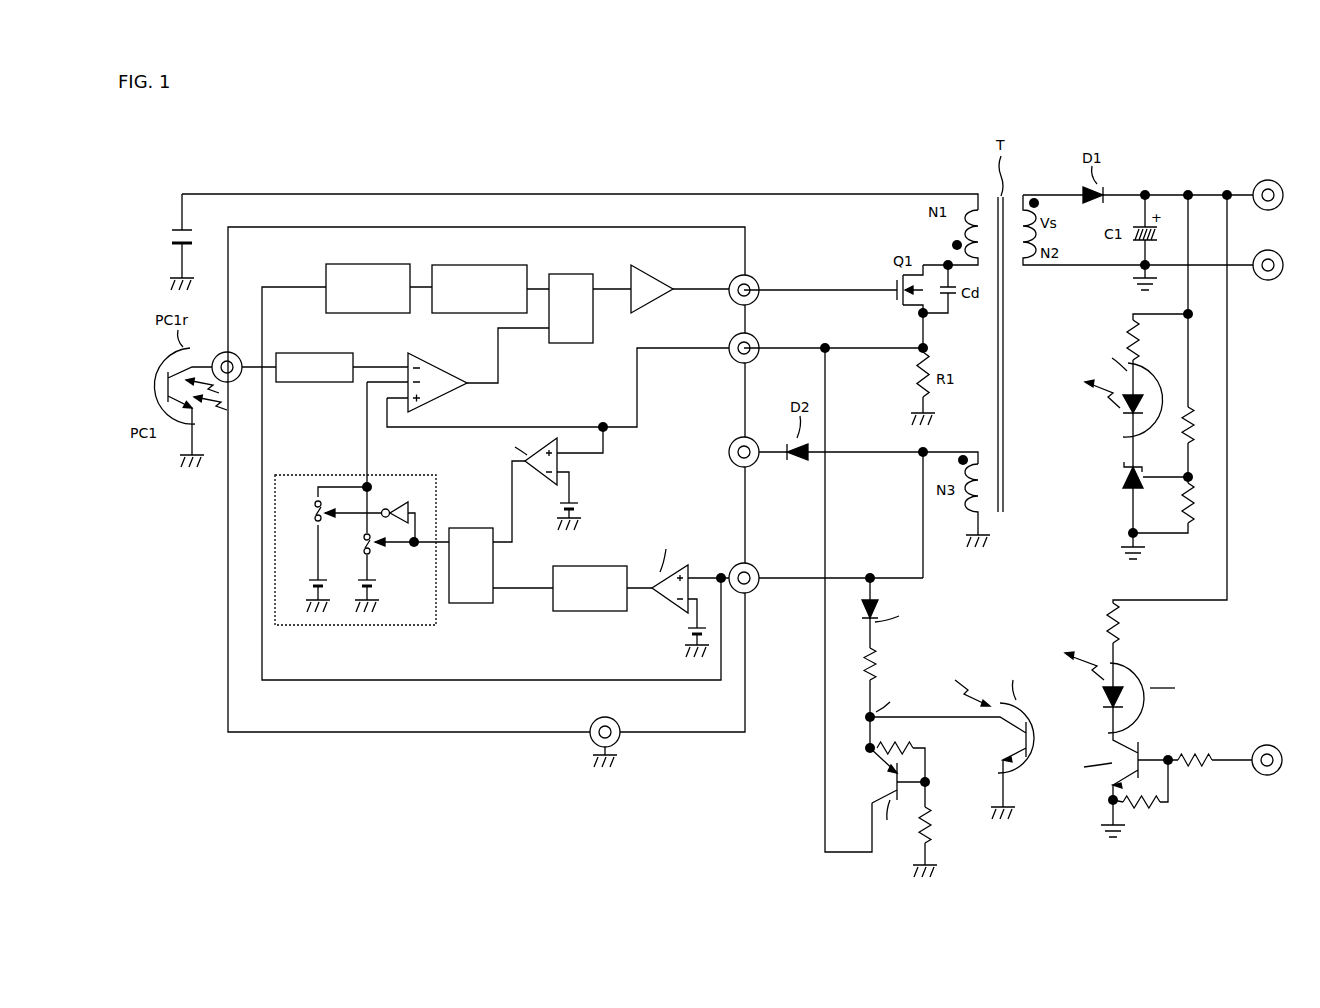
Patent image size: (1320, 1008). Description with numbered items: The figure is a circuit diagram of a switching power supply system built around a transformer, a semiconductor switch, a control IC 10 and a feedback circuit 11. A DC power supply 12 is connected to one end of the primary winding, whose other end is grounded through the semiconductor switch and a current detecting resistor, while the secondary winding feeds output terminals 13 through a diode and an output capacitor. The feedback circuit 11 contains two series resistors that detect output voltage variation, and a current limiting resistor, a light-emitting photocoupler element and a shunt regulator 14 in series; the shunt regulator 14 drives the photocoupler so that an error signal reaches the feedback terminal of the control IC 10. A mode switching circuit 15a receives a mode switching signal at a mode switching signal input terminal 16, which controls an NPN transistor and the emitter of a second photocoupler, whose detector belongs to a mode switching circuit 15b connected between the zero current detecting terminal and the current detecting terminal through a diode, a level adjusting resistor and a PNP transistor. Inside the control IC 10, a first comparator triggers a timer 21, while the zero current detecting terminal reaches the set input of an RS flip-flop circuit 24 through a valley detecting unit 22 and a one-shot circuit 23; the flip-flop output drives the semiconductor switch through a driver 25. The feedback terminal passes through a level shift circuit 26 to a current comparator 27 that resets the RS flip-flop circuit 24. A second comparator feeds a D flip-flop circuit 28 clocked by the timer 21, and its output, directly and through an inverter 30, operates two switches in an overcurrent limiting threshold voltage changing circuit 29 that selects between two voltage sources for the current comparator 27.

The control IC 10 is at (628, 227).
The feedback circuit 11 is at (1163, 377).
The DC power supply 12 is at (199, 233).
The output terminals 13 is at (1275, 210).
The shunt regulator 14 is at (1122, 481).
The mode switching circuit 15a is at (1184, 661).
The mode switching circuit 15b is at (942, 671).
The mode switching signal input terminal 16 is at (1269, 776).
The timer 21 is at (607, 566).
The valley detecting unit 22 is at (366, 264).
The one-shot circuit 23 is at (470, 265).
The RS flip-flop circuit 24 is at (571, 274).
The driver 25 is at (647, 265).
The level shift circuit 26 is at (306, 353).
The current comparator 27 is at (436, 346).
The D flip-flop circuit 28 is at (470, 528).
The overcurrent limiting threshold voltage changing circuit 29 is at (307, 475).
The inverter 30 is at (395, 502).